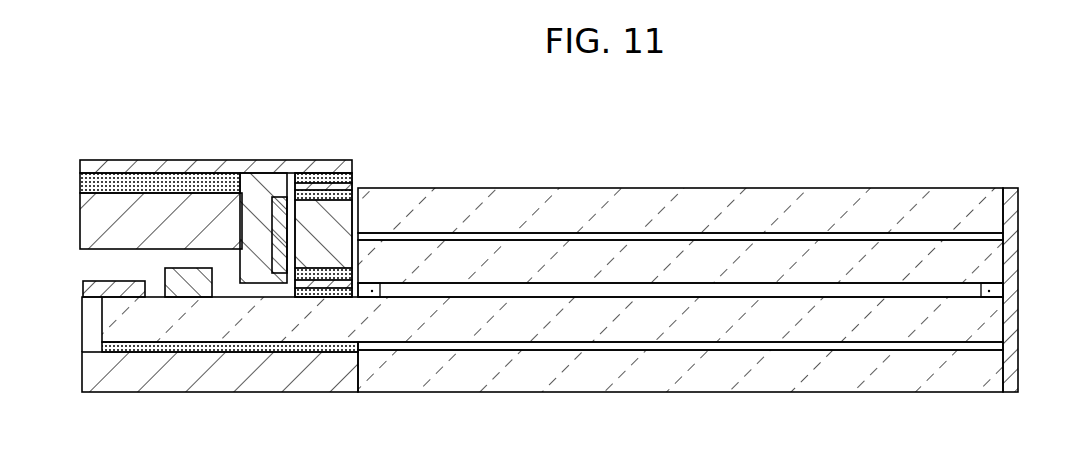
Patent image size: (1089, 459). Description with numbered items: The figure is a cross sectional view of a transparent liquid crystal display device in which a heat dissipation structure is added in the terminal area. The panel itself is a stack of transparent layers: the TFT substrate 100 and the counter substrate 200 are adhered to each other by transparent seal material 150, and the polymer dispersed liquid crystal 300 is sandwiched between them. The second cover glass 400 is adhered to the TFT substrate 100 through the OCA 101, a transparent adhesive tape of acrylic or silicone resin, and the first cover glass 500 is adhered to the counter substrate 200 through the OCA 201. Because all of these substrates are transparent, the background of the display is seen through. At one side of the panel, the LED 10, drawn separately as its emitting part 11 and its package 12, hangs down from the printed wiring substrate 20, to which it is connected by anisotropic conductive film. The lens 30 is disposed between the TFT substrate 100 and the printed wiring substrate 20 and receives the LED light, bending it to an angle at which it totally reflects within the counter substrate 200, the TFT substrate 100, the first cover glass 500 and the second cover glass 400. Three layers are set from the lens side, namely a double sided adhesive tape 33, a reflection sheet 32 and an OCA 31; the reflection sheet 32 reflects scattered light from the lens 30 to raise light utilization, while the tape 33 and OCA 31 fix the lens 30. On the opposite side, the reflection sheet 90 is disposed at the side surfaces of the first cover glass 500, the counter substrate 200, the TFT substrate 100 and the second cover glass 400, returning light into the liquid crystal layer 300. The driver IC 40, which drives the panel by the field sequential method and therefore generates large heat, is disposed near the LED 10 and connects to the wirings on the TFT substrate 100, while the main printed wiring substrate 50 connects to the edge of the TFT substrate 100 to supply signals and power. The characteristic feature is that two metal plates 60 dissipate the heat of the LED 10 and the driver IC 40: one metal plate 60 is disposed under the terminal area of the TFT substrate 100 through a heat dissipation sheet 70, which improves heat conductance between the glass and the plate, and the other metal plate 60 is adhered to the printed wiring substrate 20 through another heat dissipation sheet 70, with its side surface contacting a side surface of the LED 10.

The LED 10 is at (218, 101).
The emitting part 11 is at (278, 197).
The package 12 is at (255, 197).
The printed wiring substrate 20 is at (178, 168).
The lens 30 is at (338, 222).
The OCA 31 is at (312, 174).
The reflection sheet 32 is at (325, 186).
The double sided adhesive tape 33 is at (340, 200).
The driver IC 40 is at (185, 285).
The main printed wiring substrate 50 is at (125, 290).
The metal plate 60 is at (95, 219).
The heat dissipation sheet 70 is at (122, 185).
The reflection sheet 90 is at (1010, 190).
The TFT substrate 100 is at (992, 318).
The OCA 101 is at (992, 345).
The transparent seal material 150 is at (992, 290).
The counter substrate 200 is at (992, 264).
The OCA 201 is at (990, 238).
The polymer dispersed liquid crystal 300 is at (811, 292).
The second cover glass 400 is at (992, 370).
The first cover glass 500 is at (990, 208).